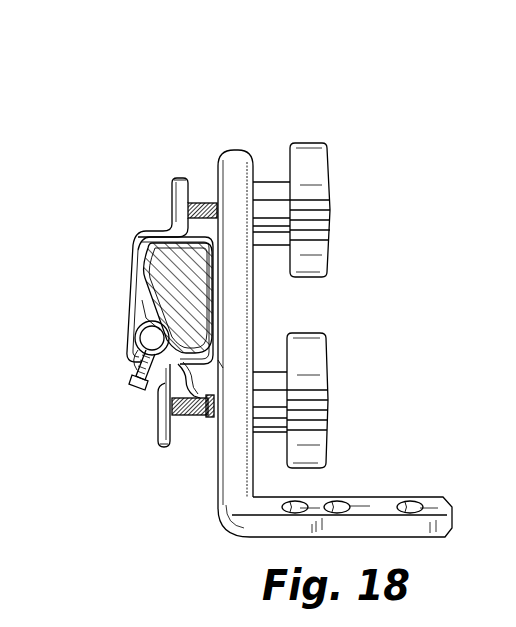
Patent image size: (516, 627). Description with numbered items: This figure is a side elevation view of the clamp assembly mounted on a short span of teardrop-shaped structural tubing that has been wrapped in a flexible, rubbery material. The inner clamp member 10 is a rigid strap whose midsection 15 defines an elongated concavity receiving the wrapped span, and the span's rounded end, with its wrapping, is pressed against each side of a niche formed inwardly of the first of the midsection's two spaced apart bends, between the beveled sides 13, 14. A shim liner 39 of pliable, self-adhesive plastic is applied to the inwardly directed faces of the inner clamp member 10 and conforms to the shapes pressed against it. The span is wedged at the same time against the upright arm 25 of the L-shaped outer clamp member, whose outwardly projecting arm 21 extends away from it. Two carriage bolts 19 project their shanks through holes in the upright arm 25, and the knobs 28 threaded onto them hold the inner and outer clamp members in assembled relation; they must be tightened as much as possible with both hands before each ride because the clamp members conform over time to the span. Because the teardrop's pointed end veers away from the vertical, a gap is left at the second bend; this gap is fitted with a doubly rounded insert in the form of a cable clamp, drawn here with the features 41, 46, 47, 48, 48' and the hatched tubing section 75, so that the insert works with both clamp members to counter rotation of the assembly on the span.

The inner clamp member 10 is at (120, 280).
The beveled side 13 is at (158, 233).
The beveled side 14 is at (128, 373).
The midsection 15 is at (138, 255).
The carriage bolt 19 is at (209, 200).
The outwardly projecting arm 21 is at (362, 497).
The upright arm 25 is at (241, 163).
The knob 28 is at (331, 210).
The shim liner 39 is at (190, 182).
The slot 41 is at (217, 368).
The screw 46 is at (134, 382).
The clamp ring 47 is at (140, 343).
The pad support 48 is at (94, 302).
The lower pad support 48' is at (177, 447).
The resilient pad 75 is at (198, 273).